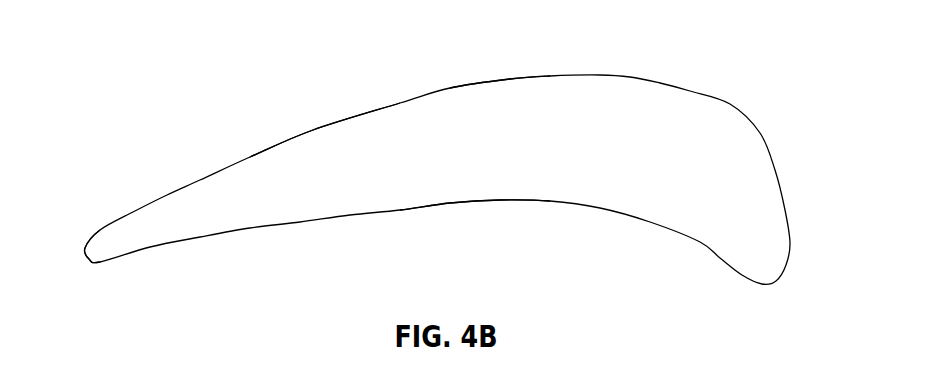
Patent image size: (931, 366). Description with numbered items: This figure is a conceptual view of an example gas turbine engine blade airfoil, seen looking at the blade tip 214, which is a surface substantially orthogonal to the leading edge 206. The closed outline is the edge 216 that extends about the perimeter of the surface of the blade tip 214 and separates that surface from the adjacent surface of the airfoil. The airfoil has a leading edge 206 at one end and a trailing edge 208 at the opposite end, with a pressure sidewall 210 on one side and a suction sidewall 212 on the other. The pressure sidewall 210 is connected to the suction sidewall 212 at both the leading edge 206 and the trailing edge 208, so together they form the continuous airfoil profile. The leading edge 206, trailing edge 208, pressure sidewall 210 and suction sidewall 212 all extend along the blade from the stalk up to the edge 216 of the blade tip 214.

The leading edge 206 is at (777, 105).
The trailing edge 208 is at (76, 222).
The pressure sidewall 210 is at (467, 230).
The suction sidewall 212 is at (336, 87).
The blade tip 214 is at (483, 161).
The edge 216 is at (508, 79).